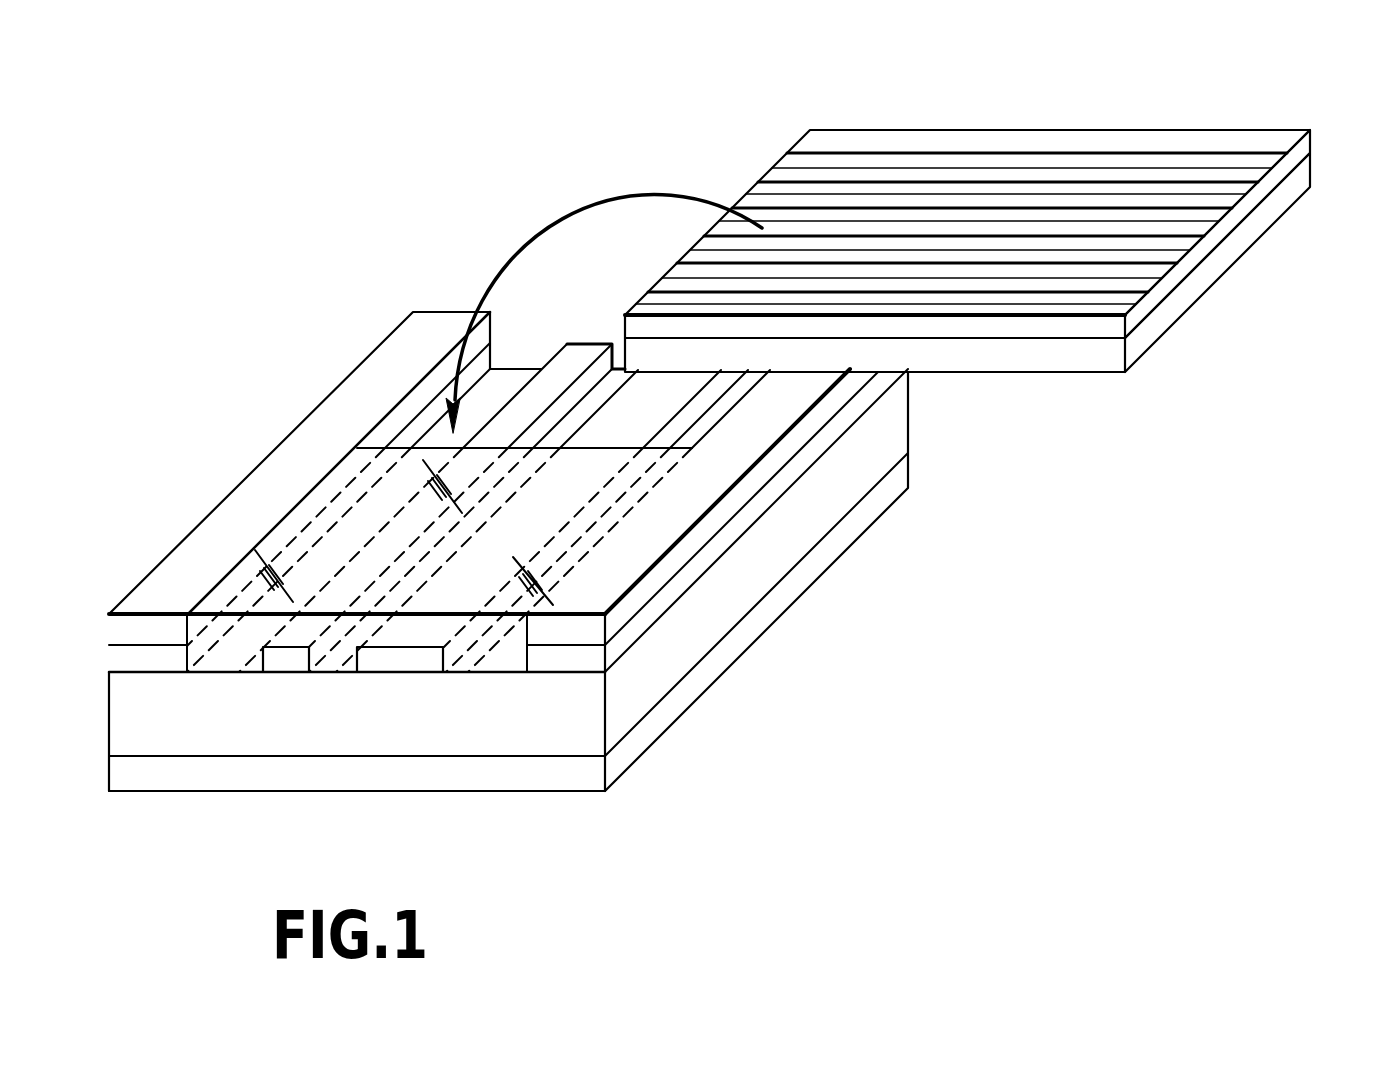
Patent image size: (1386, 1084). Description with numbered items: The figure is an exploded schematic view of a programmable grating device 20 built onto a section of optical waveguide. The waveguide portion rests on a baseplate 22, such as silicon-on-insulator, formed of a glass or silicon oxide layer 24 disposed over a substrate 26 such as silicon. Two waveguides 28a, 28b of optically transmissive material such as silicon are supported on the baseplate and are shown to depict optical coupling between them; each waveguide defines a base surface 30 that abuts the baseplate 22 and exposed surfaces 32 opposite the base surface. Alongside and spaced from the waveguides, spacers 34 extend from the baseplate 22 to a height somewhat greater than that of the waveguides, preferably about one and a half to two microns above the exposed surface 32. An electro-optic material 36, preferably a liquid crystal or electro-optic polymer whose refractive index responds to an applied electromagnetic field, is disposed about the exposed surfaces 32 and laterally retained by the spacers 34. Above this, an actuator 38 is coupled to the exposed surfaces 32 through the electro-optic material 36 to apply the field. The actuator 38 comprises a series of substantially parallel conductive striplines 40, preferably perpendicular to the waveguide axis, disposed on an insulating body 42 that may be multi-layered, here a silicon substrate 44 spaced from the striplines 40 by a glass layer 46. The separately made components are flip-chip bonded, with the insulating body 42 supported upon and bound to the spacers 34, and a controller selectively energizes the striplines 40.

The programmable grating device 20 is at (392, 182).
The baseplate 22 is at (90, 675).
The glass or silicon oxide layer 24 is at (180, 738).
The substrate 26 is at (237, 778).
The waveguide 28a is at (567, 352).
The waveguide 28b is at (680, 378).
The base surface 30 is at (418, 675).
The exposed surfaces 32 is at (418, 637).
The spacers 34 is at (593, 630).
The electro-optic material 36 is at (593, 493).
The actuator 38 is at (1005, 243).
The striplines 40 is at (1113, 308).
The insulating body 42 is at (1255, 246).
The silicon substrate 44 is at (1198, 280).
The glass layer 46 is at (1225, 222).